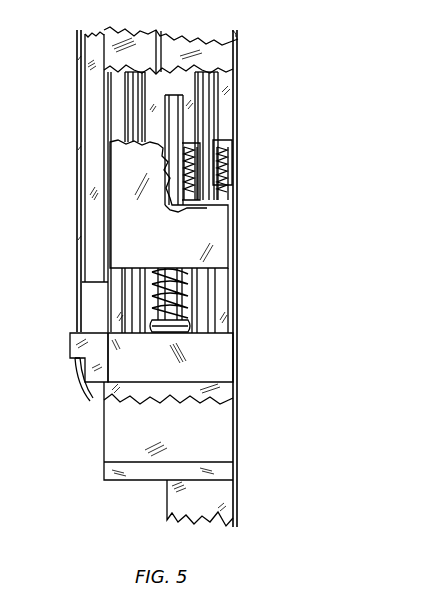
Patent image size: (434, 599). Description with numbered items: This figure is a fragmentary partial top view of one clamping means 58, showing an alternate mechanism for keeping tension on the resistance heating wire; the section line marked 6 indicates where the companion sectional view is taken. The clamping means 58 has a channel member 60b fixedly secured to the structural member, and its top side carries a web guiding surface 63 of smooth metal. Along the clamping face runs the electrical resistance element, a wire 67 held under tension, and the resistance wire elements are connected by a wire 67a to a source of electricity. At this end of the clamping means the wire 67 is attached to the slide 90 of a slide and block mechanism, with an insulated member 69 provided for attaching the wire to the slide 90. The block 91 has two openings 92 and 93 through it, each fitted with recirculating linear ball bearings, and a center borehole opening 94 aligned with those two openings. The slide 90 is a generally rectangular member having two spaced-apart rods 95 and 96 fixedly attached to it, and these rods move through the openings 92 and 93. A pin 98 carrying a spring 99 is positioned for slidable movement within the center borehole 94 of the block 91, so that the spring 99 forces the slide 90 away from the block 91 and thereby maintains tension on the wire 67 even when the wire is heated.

The clamping means 58 is at (293, 443).
The web guiding surface 63 is at (90, 46).
The wire 67 is at (77, 138).
The wire 67a is at (75, 363).
The channel member 60b is at (85, 230).
The insulated member 69 is at (70, 333).
The slide 90 is at (223, 350).
The block 91 is at (223, 258).
The opening 92 is at (120, 127).
The opening 93 is at (220, 139).
The center borehole opening 94 is at (160, 143).
The rod 95 is at (220, 108).
The rod 96 is at (127, 90).
The pin 98 is at (197, 130).
The spring 99 is at (190, 318).
The section line 6- 6 is at (104, 418).